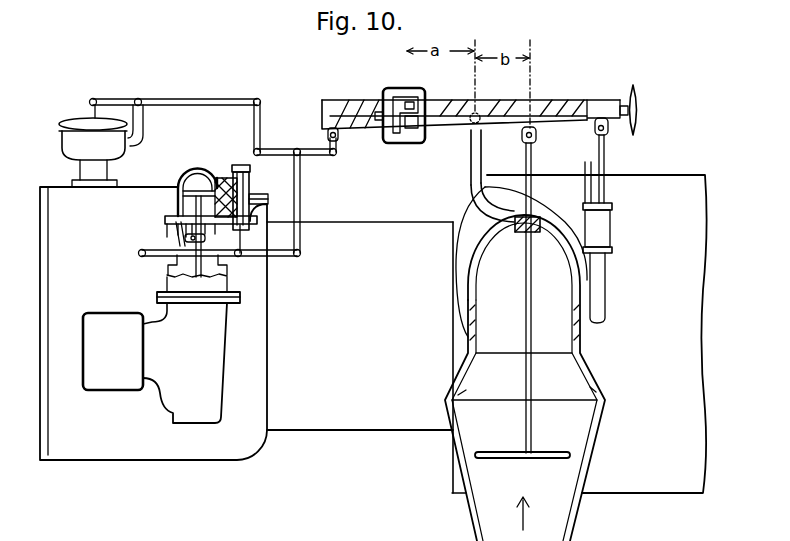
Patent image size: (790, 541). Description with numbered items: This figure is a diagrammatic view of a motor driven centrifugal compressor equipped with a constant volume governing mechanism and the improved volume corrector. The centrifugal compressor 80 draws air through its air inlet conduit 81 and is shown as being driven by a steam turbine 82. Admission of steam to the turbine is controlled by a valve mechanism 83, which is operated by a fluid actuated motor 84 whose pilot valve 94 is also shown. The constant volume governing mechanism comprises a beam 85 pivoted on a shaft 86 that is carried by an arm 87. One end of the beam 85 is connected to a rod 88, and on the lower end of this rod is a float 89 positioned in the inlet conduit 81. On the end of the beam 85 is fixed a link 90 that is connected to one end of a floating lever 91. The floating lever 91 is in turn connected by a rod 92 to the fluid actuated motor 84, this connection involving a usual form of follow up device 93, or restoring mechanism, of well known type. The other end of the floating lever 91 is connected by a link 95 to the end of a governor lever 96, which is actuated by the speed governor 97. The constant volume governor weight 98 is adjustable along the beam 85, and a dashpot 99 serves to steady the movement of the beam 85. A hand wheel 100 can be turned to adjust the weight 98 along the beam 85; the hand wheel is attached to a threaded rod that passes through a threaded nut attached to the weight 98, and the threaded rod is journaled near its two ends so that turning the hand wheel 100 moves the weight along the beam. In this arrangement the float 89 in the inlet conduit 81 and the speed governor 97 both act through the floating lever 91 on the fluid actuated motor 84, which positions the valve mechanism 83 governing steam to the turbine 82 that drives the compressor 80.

The centrifugal compressor 80 is at (693, 447).
The air inlet conduit 81 is at (448, 486).
The steam turbine 82 is at (148, 448).
The valve mechanism 83 is at (198, 262).
The fluid actuated motor 84 is at (178, 193).
The beam 85 is at (500, 100).
The shaft 86 is at (475, 112).
The arm 87 is at (475, 147).
The rod 88 is at (475, 168).
The float 89 is at (530, 460).
The link 90 is at (338, 144).
The floating lever 91 is at (313, 155).
The rod 92 is at (298, 207).
The follow up device 93 is at (158, 253).
The pilot valve 94 is at (265, 180).
The link 95 is at (258, 127).
The governor lever 96 is at (173, 97).
The speed governor 97 is at (93, 146).
The constant volume governor weight 98 is at (410, 80).
The dashpot 99 is at (600, 230).
The hand wheel 100 is at (640, 92).